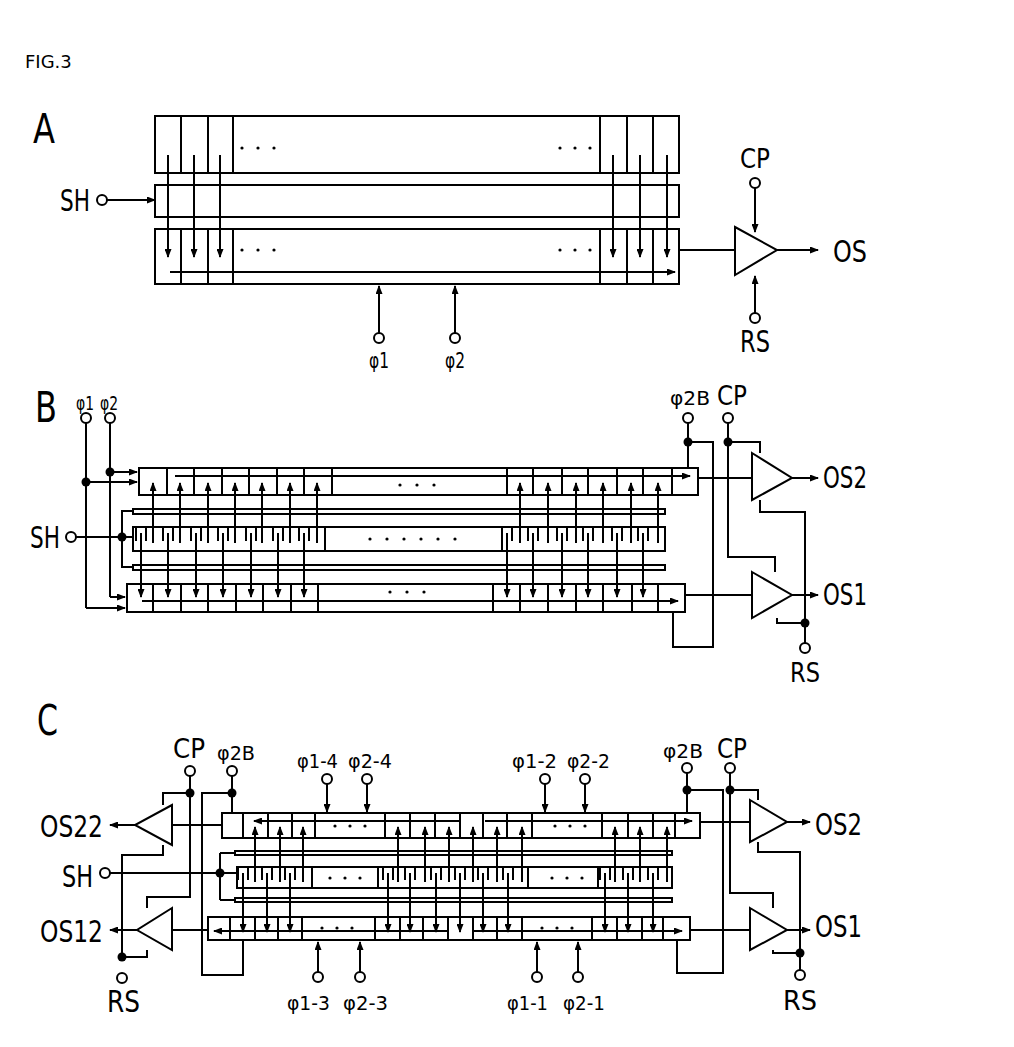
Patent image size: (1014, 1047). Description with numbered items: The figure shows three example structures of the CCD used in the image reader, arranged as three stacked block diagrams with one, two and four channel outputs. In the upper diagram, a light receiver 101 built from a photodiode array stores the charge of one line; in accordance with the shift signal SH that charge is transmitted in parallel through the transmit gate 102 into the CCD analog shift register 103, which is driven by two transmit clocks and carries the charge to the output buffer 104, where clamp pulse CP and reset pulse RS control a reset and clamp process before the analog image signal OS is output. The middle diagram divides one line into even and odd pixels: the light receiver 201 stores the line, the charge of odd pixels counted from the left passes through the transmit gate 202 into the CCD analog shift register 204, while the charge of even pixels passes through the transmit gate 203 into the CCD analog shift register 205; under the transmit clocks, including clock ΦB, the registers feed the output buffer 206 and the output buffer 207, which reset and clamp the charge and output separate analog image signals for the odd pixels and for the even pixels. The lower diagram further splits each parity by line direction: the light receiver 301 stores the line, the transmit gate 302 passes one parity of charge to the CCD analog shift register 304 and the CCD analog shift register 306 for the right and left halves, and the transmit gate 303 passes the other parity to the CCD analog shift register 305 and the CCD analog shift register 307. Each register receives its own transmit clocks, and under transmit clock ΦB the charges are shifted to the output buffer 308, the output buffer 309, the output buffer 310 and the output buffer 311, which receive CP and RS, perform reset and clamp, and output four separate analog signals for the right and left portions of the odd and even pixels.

The light receiver 101 is at (679, 136).
The transmit gate 102 is at (679, 199).
The CCD analog shift register 103 is at (647, 285).
The output buffer 104 is at (763, 258).
The light receiver 201 is at (665, 542).
The transmit gate 202 is at (688, 647).
The transmit gate 203 is at (668, 503).
The CCD analog shift register 204 is at (603, 612).
The CCD analog shift register 205 is at (365, 468).
The output buffer 206 is at (763, 615).
The output buffer 207 is at (782, 467).
The light receiver 301 is at (672, 883).
The transmit gate 302 is at (673, 902).
The transmit gate 303 is at (683, 850).
The CCD analog shift register 304 is at (633, 940).
The CCD analog shift register 305 is at (613, 812).
The CCD analog shift register 306 is at (417, 943).
The CCD analog shift register 307 is at (428, 813).
The output buffer 308 is at (763, 947).
The output buffer 309 is at (778, 807).
The output buffer 310 is at (158, 948).
The output buffer 311 is at (142, 812).